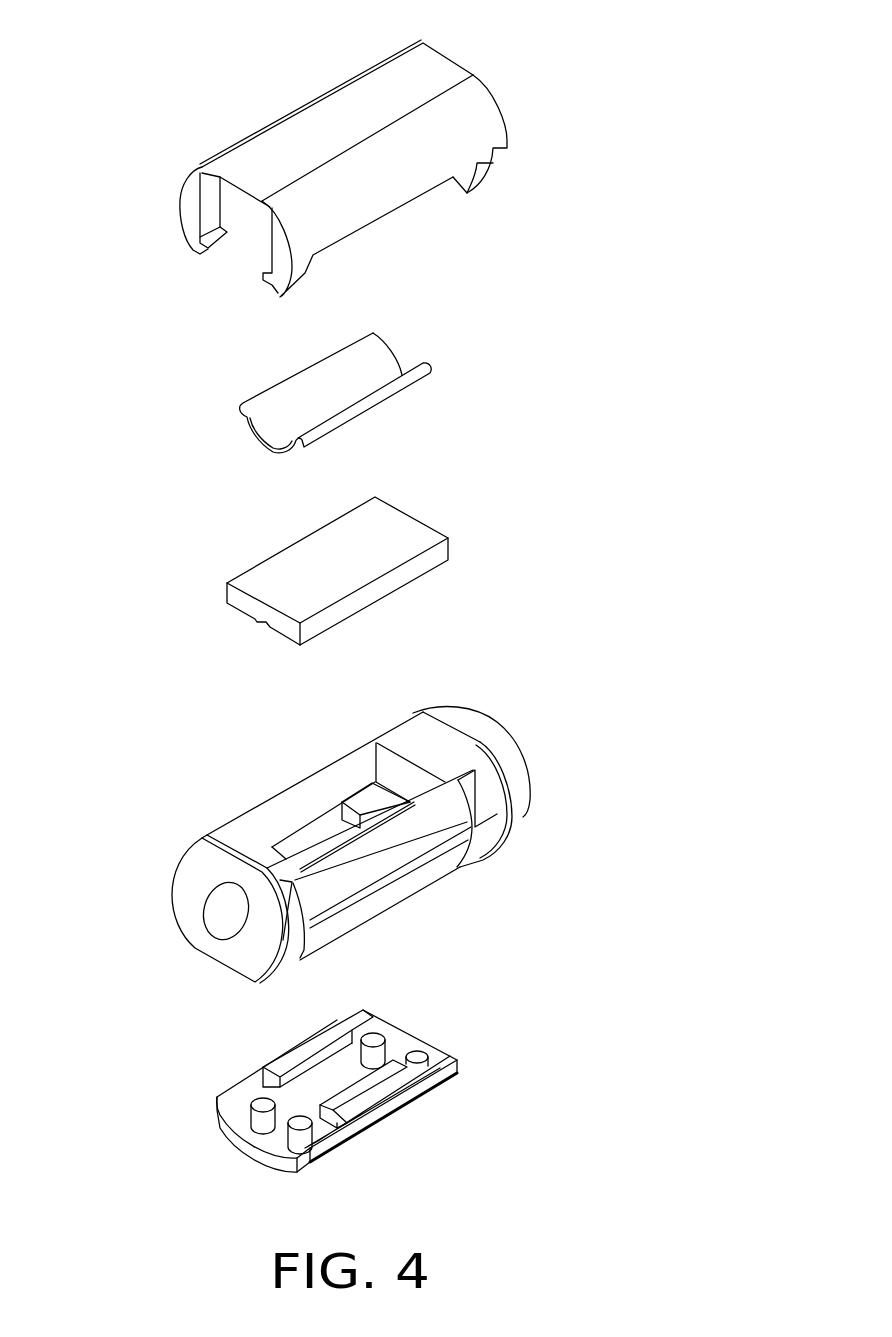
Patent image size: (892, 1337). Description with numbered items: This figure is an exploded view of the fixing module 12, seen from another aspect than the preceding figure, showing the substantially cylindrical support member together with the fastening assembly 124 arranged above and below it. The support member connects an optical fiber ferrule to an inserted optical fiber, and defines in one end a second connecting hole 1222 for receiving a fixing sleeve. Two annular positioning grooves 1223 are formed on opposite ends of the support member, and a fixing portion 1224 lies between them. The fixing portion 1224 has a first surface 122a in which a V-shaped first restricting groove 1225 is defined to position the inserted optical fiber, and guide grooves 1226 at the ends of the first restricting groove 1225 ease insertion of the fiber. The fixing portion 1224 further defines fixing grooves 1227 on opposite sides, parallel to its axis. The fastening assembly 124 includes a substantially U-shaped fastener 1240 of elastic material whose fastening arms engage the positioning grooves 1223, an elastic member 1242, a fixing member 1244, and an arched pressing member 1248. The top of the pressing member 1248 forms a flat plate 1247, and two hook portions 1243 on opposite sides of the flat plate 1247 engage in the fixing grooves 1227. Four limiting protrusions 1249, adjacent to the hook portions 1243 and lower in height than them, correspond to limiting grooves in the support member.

The fixing module 12 is at (123, 74).
The fastening assembly 124 is at (171, 470).
The fastener 1240 is at (423, 73).
The elastic member 1242 is at (373, 368).
The fixing member 1244 is at (388, 528).
The second connecting hole 1222 is at (222, 903).
The first surface 122a is at (332, 837).
The fixing portion 1224 is at (367, 795).
The first restricting groove 1225 is at (370, 840).
The guide groove 1226 is at (480, 742).
The fixing groove 1227 is at (290, 847).
The annular positioning groove 1223 is at (483, 830).
The pressing member 1248 is at (228, 1045).
The limiting protrusion 1249 is at (380, 1033).
The flat plate 1247 is at (272, 1138).
The hook portion 1243 is at (367, 1080).